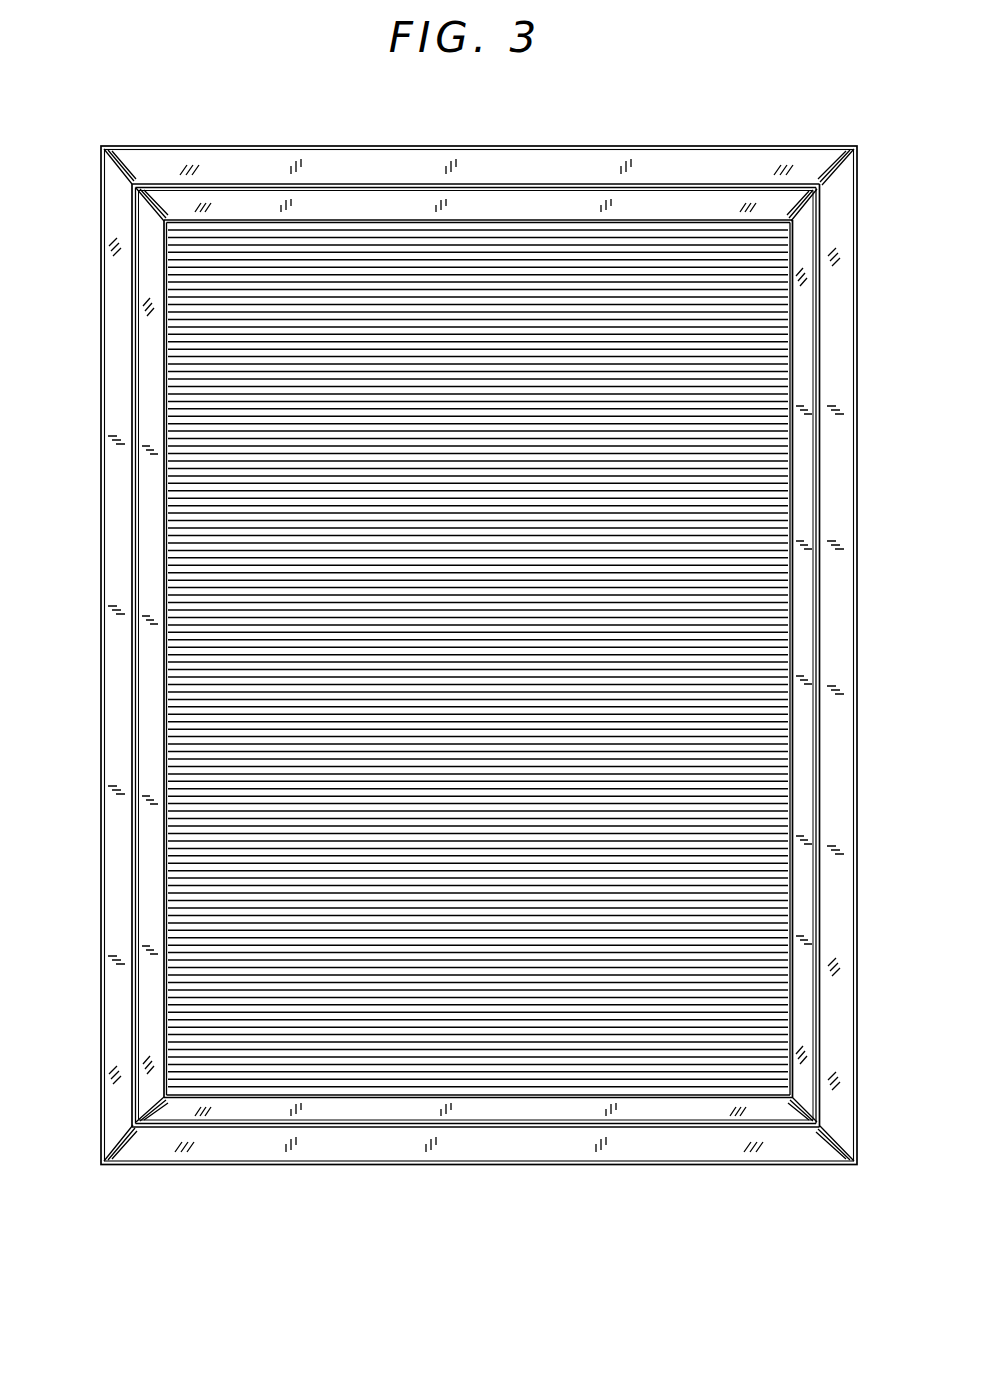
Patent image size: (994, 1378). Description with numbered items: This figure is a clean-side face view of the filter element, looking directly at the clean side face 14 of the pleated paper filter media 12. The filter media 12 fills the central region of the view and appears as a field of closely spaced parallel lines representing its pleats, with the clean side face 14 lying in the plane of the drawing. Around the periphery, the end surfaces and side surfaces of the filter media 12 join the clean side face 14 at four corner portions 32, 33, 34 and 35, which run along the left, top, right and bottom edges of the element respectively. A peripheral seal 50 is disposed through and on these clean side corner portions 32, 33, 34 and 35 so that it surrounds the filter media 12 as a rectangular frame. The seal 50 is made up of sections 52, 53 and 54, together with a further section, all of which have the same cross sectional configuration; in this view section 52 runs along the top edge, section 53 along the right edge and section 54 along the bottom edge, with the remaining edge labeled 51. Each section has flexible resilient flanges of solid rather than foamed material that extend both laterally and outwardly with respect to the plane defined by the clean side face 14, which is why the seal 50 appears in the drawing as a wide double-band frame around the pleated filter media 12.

The pleated paper filter media 12 is at (478, 587).
The clean side face 14 is at (474, 354).
The corner portion 32 is at (140, 680).
The corner portion 33 is at (589, 172).
The corner portion 34 is at (830, 676).
The corner portion 35 is at (552, 1140).
The peripheral seal 50 is at (703, 175).
The left frame side 51 is at (129, 379).
The seal section 52 is at (375, 181).
The seal section 53 is at (822, 480).
The seal section 54 is at (504, 1155).